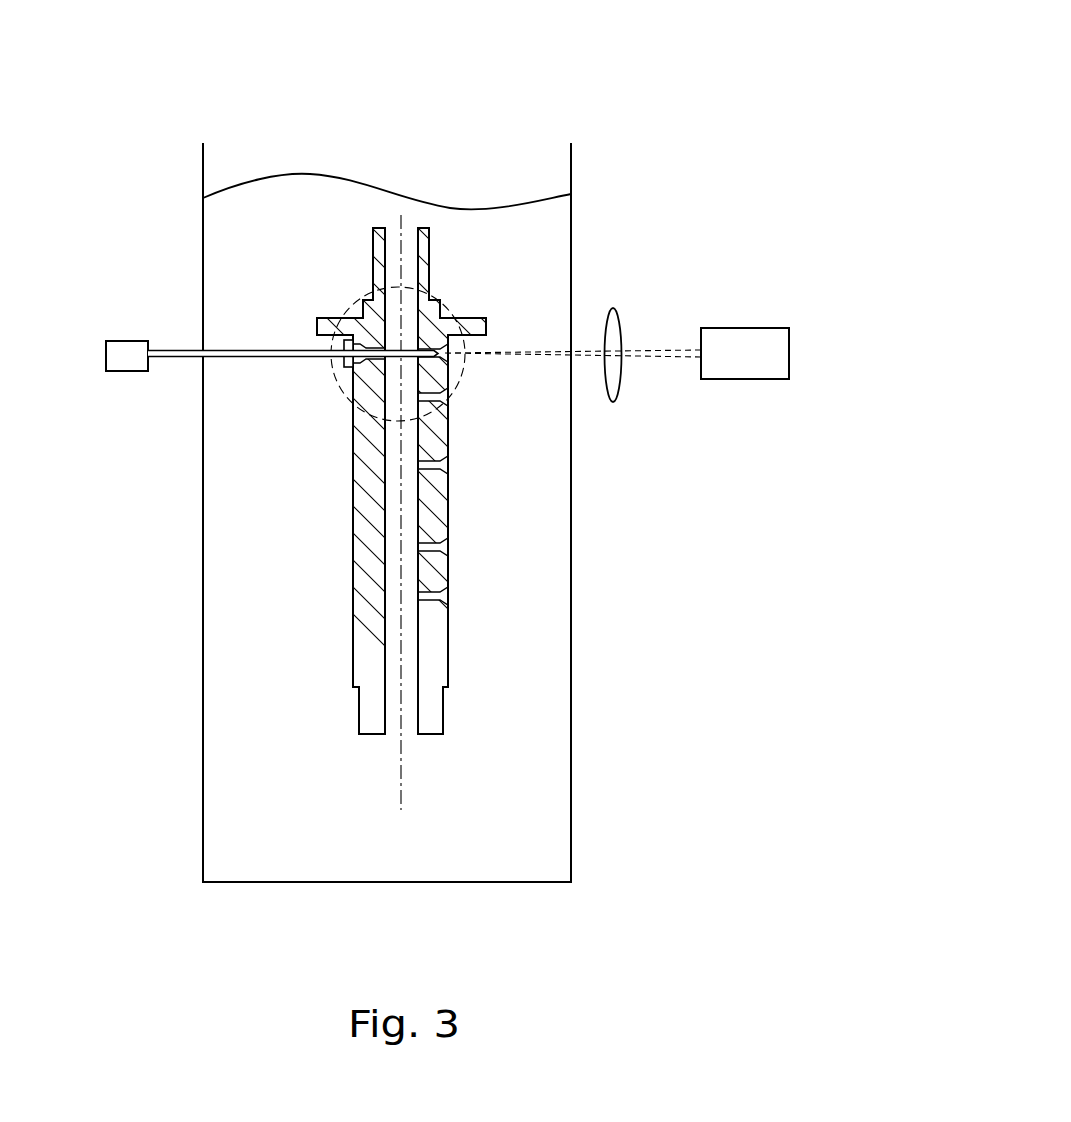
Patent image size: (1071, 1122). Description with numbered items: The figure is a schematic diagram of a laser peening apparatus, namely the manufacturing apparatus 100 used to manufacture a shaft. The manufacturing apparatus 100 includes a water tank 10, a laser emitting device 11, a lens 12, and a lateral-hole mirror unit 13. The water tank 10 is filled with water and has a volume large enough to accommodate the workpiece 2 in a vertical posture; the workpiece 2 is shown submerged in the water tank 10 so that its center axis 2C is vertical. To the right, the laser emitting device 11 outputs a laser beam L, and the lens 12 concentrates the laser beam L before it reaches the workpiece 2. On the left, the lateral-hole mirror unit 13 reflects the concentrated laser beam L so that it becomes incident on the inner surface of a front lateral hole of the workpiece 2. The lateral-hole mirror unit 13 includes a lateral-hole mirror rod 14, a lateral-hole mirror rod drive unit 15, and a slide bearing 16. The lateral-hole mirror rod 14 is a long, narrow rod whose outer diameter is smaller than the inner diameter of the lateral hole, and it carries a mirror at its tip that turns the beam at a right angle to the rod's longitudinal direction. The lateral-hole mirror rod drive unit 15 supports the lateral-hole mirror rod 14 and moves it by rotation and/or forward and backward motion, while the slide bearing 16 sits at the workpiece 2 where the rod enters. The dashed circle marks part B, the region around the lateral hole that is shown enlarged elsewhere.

The manufacturing apparatus 100 is at (697, 87).
The water tank 10 is at (571, 173).
The workpiece 2 is at (293, 699).
The center axis 2C is at (401, 787).
The part B is at (353, 305).
The lateral-hole mirror unit 13 is at (259, 387).
The lateral-hole mirror rod 14 is at (258, 351).
The lateral-hole mirror rod drive unit 15 is at (122, 340).
The slide bearing 16 is at (347, 370).
The laser beam L is at (538, 351).
The lens 12 is at (620, 309).
The laser emitting device 11 is at (733, 328).